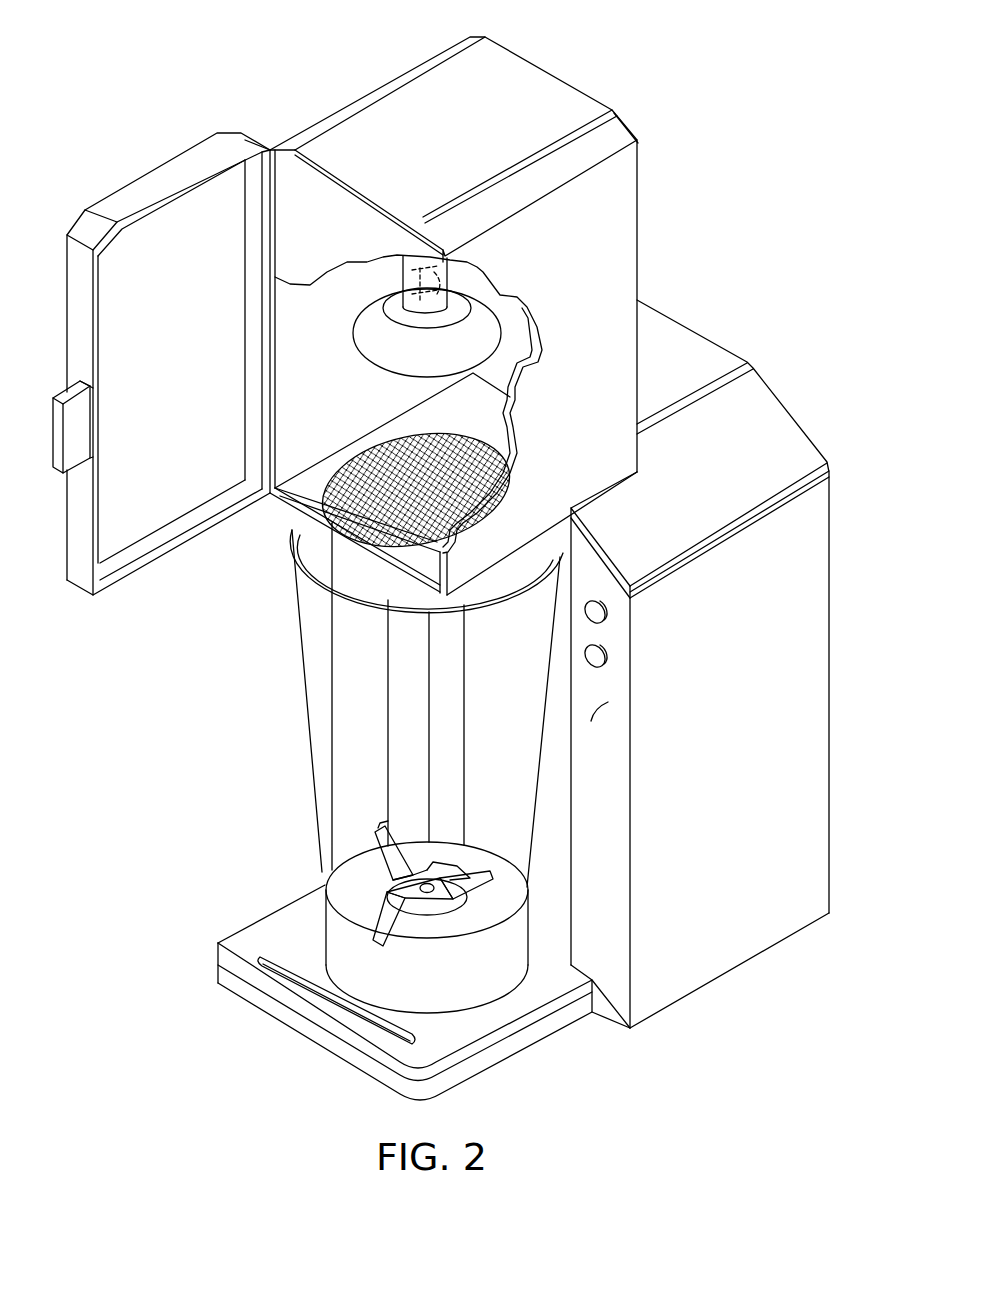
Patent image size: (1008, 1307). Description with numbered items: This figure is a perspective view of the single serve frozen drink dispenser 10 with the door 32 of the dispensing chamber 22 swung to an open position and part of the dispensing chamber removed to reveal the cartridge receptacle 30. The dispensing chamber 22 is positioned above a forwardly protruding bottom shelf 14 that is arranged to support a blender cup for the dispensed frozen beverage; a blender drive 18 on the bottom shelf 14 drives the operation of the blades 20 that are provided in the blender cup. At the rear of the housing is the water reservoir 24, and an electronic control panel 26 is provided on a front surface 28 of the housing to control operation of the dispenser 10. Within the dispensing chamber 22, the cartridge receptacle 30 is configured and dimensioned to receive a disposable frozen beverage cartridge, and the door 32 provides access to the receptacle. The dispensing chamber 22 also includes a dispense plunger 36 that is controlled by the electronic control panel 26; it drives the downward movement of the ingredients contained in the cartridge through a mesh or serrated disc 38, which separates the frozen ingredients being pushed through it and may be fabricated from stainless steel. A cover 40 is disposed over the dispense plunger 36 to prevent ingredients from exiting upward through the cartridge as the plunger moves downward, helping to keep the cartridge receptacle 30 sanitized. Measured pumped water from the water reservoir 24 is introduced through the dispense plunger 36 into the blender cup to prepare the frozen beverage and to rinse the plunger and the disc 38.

The frozen drink dispenser 10 is at (607, 59).
The bottom shelf 14 is at (233, 938).
The blender drive 18 is at (443, 920).
The blades 20 is at (393, 912).
The dispensing chamber 22 is at (347, 132).
The water reservoir 24 is at (793, 812).
The electronic control panel 26 is at (597, 633).
The front surface 28 is at (600, 718).
The cartridge receptacle 30 is at (467, 402).
The door 32 is at (155, 180).
The dispense plunger 36 is at (412, 288).
The mesh disc 38 is at (397, 533).
The cover 40 is at (383, 349).